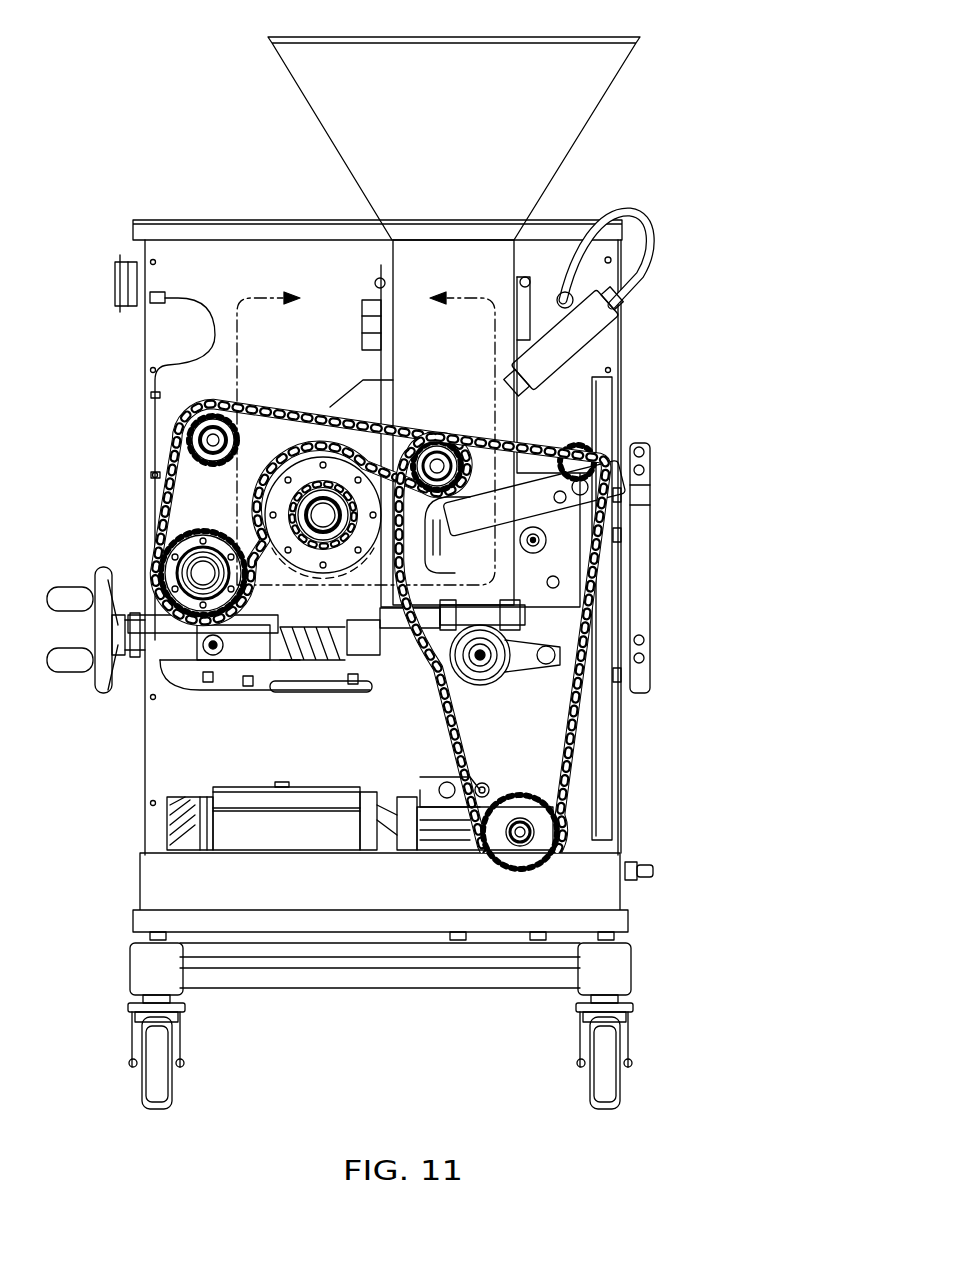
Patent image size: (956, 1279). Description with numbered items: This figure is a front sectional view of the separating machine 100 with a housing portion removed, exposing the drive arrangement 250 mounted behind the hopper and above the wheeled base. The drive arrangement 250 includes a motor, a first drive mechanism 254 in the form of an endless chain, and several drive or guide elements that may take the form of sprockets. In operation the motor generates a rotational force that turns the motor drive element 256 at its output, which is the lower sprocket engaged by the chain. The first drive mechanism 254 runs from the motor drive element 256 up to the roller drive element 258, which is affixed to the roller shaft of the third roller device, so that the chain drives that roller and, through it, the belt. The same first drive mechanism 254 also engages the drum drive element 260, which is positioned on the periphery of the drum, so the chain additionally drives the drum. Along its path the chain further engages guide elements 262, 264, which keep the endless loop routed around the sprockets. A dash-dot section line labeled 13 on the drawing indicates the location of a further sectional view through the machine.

The separating machine 100 is at (178, 100).
The section view indicator 13 is at (366, 422).
The drive arrangement 250 is at (187, 800).
The first drive mechanism 254 is at (582, 714).
The motor drive element 256 is at (496, 832).
The roller drive element 258 is at (168, 578).
The drum drive element 260 is at (287, 548).
The guide element 262 is at (180, 432).
The guide element 264 is at (577, 460).